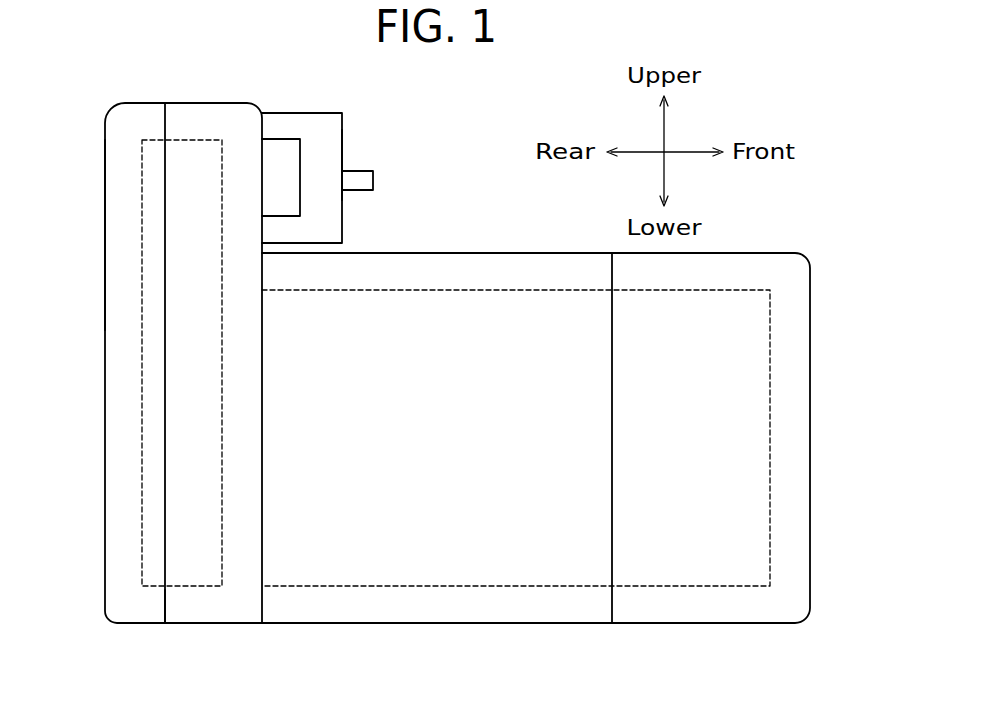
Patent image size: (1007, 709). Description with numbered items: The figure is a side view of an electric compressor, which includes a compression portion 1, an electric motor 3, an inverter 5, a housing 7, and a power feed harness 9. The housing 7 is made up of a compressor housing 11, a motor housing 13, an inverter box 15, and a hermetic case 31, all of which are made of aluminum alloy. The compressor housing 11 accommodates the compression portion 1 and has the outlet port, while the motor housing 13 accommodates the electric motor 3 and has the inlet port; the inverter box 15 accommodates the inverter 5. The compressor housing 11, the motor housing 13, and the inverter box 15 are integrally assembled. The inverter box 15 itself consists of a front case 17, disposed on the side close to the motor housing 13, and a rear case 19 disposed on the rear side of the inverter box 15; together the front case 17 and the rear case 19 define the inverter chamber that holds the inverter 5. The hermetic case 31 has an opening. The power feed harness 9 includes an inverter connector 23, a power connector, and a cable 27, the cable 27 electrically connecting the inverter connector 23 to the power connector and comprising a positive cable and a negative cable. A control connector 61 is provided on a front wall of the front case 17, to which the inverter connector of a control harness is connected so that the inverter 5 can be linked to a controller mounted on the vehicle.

The compression portion 1 is at (745, 437).
The electric motor 3 is at (520, 322).
The inverter 5 is at (188, 155).
The housing 7 is at (88, 349).
The power feed harness 9 is at (358, 150).
The compressor housing 11 is at (790, 313).
The motor housing 13 is at (461, 268).
The inverter box 15 is at (118, 158).
The front case 17 is at (208, 608).
The rear case 19 is at (135, 608).
The inverter connector 23 is at (294, 127).
The cable 27 is at (358, 180).
The hermetic case 31 is at (325, 127).
The control connector 61 is at (290, 193).